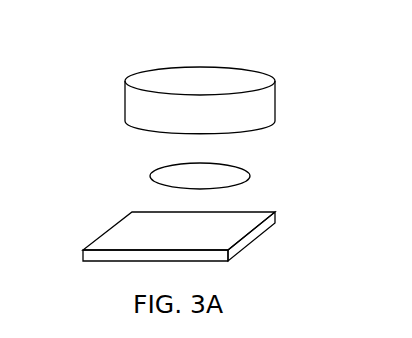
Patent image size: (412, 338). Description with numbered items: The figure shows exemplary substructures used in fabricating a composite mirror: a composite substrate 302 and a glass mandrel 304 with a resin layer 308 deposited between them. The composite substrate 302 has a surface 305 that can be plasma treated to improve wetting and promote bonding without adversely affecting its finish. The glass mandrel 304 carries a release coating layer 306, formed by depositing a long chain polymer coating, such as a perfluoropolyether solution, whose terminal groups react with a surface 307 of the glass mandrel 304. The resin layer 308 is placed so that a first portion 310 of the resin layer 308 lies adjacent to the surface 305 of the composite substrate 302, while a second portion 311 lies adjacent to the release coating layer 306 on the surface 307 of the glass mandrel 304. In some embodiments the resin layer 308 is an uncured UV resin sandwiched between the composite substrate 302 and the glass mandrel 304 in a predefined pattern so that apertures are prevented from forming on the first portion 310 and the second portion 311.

The composite substrate 302 is at (185, 260).
The glass mandrel 304 is at (287, 67).
The surface 305 is at (113, 244).
The release coating layer 306 is at (135, 127).
The surface 307 is at (248, 137).
The resin layer 308 is at (198, 184).
The first portion 310 is at (236, 185).
The second portion 311 is at (155, 174).